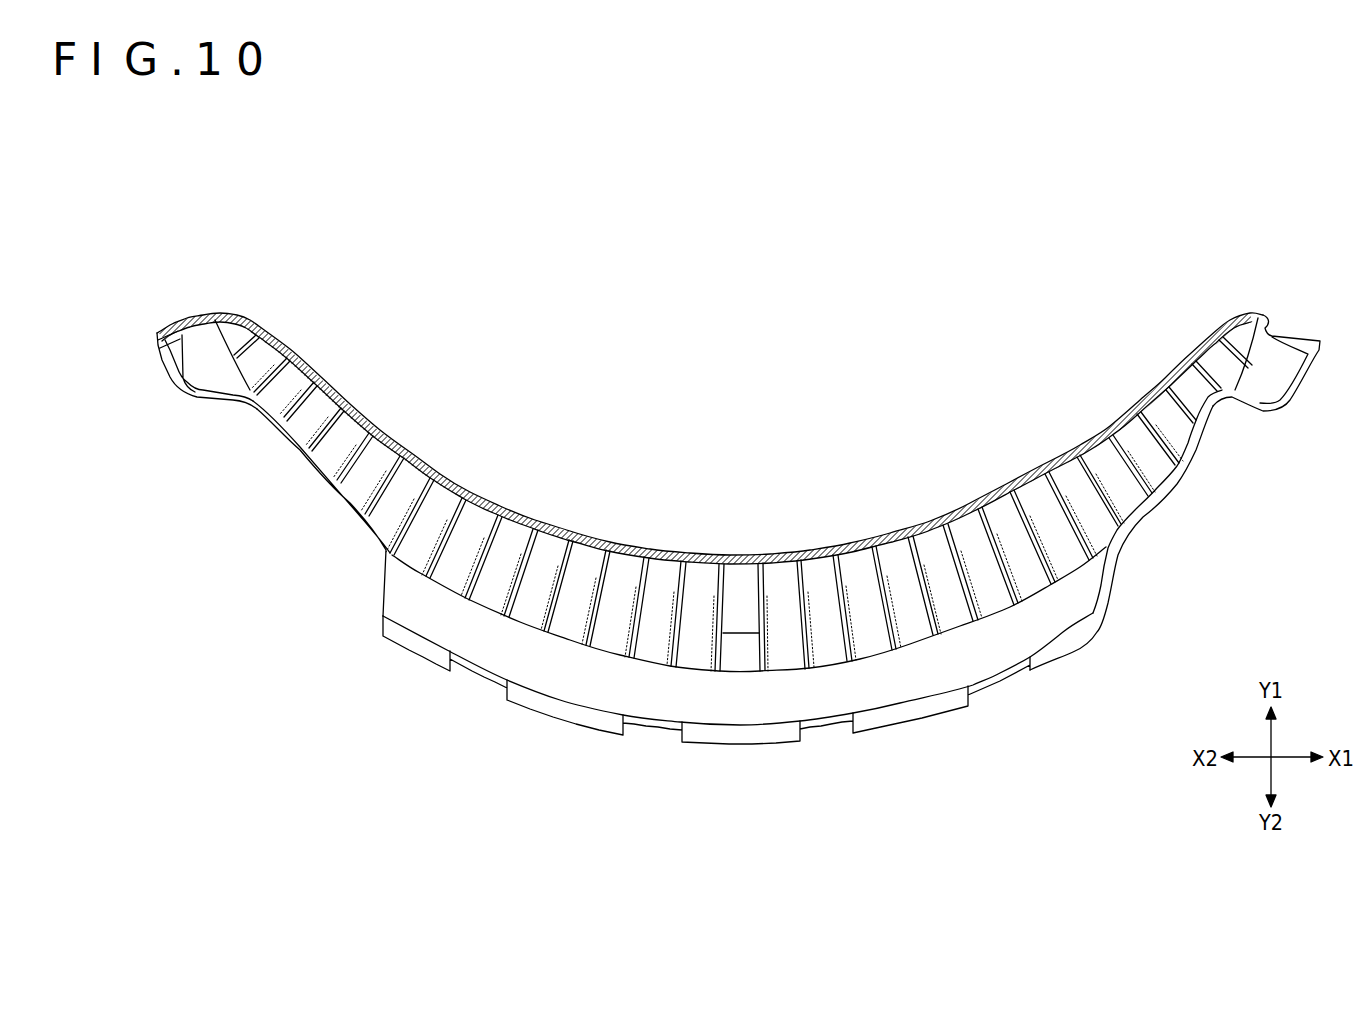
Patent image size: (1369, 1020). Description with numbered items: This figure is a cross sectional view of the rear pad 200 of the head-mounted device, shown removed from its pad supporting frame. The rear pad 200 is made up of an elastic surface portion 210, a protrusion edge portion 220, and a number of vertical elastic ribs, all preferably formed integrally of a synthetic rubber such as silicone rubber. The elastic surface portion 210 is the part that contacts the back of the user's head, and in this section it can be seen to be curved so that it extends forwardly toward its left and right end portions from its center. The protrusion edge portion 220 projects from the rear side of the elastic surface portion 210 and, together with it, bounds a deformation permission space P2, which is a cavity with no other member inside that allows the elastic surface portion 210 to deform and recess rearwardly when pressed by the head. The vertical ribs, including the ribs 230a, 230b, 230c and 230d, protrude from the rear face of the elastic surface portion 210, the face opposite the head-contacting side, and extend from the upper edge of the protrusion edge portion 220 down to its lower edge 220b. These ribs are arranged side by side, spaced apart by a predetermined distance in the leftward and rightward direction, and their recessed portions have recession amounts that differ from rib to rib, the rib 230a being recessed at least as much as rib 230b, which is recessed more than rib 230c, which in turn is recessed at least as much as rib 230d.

The rear pad 200 is at (1170, 251).
The elastic surface portion 210 is at (772, 554).
The protrusion edge portion 220 is at (864, 581).
The lower edge 220b is at (828, 692).
The vertical rib 230a is at (672, 592).
The vertical rib 230b is at (529, 545).
The vertical rib 230c is at (372, 470).
The vertical rib 230d is at (243, 338).
The deformation permission space P2 is at (741, 620).